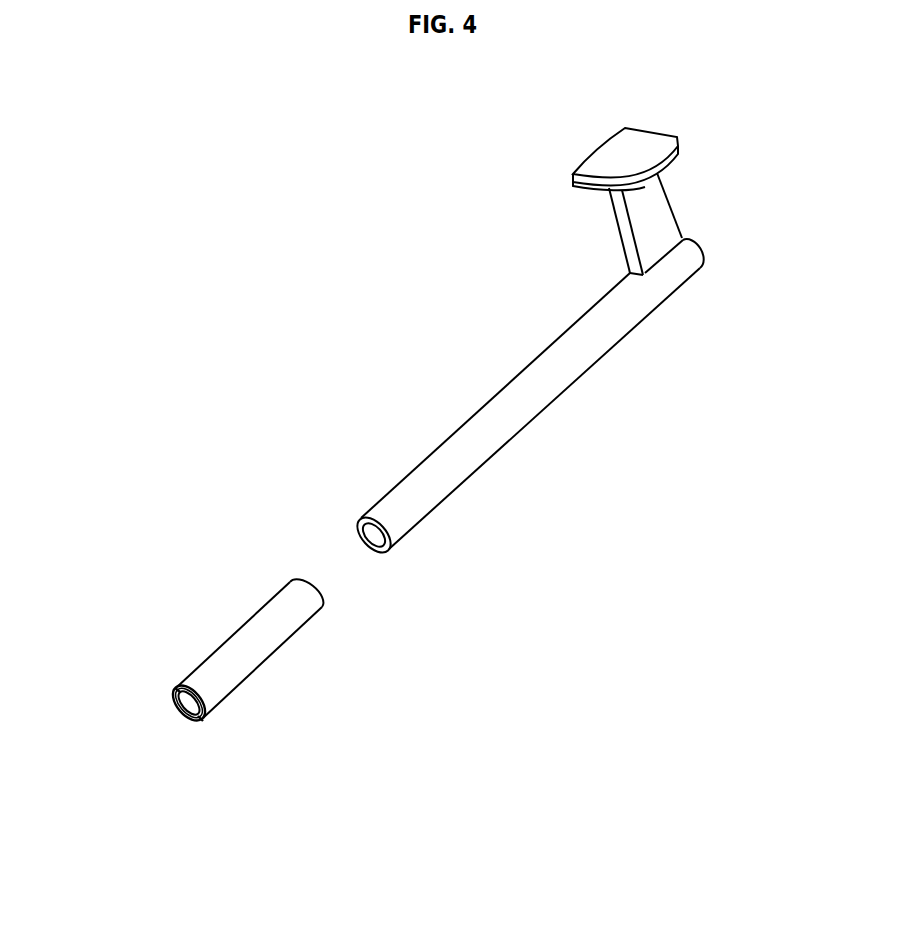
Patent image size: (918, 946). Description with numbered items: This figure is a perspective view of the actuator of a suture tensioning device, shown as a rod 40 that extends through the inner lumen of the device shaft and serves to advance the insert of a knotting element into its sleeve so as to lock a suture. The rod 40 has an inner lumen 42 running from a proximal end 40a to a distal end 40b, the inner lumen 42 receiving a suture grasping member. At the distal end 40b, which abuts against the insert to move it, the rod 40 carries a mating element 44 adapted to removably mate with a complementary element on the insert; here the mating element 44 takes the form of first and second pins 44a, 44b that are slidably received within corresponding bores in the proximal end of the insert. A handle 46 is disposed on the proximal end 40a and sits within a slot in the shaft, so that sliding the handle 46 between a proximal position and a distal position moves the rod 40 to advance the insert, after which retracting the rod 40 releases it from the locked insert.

The rod 40 is at (243, 373).
The proximal end 40a is at (713, 245).
The distal end 40b is at (135, 698).
The inner lumen 42 is at (187, 700).
The mating element 44 is at (188, 735).
The first pin 44a is at (180, 688).
The second pin 44b is at (198, 720).
The handle 46 is at (622, 157).